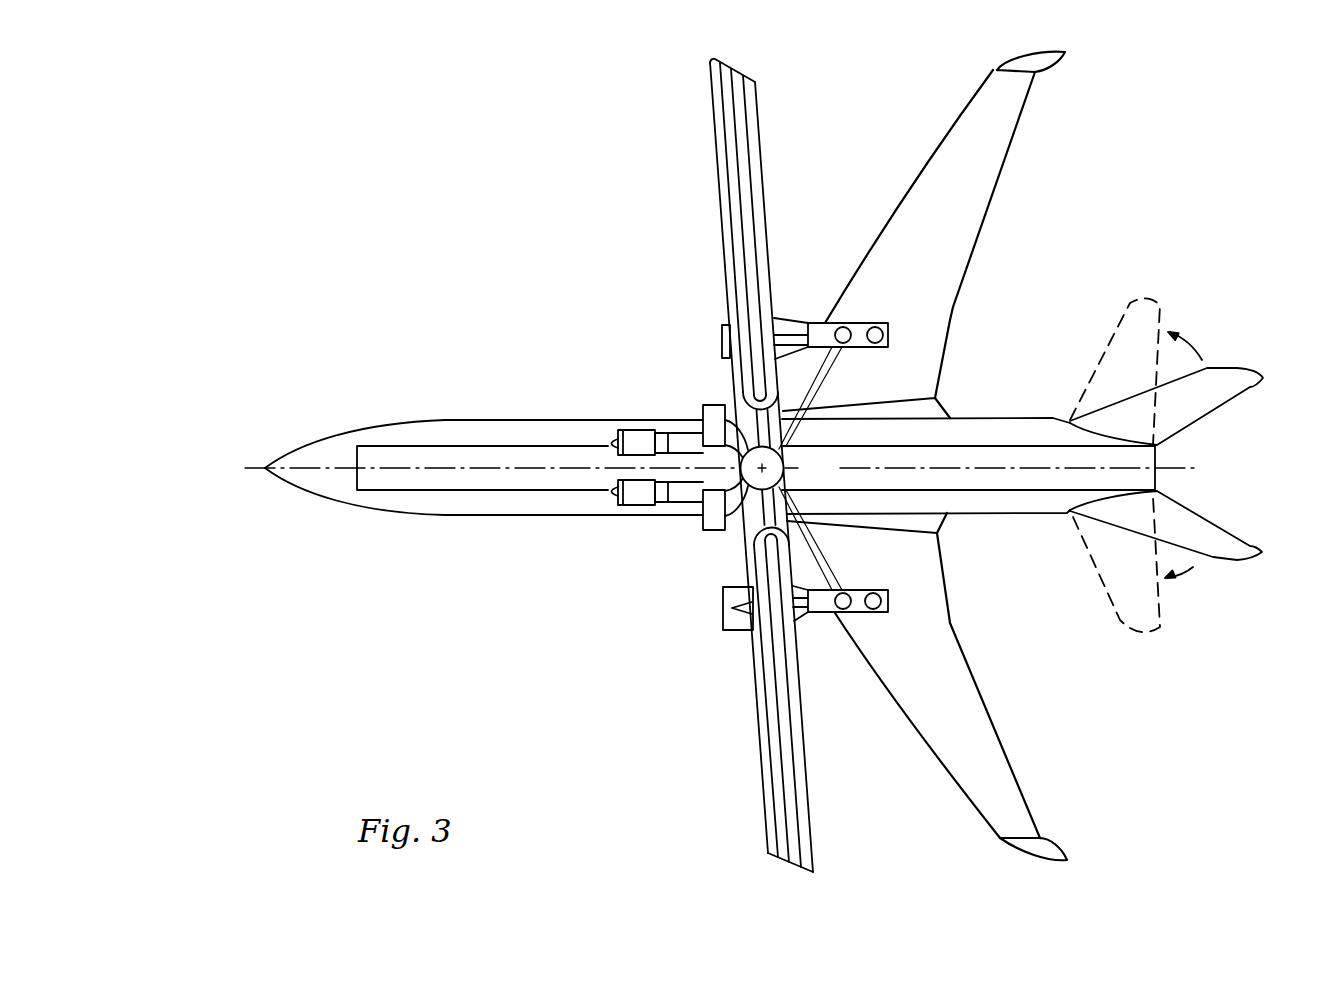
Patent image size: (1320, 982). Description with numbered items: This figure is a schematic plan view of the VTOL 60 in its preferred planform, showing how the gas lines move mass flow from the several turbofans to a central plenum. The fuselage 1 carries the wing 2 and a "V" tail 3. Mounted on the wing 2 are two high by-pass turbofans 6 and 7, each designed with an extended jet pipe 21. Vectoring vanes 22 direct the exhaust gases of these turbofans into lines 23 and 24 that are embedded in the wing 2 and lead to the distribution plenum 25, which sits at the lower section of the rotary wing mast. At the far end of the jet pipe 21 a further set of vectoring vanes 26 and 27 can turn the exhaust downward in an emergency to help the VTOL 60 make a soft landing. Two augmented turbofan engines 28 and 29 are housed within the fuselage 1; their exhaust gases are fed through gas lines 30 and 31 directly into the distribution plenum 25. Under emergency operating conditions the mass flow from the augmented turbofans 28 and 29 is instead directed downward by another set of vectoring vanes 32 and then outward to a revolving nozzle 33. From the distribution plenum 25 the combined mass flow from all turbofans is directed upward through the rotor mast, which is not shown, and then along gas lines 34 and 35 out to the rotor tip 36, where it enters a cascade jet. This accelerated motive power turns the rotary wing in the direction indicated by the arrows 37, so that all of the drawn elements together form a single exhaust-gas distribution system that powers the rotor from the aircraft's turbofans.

The fuselage 1 is at (445, 418).
The wing 2 is at (917, 212).
The "V" tail 3 is at (1210, 535).
The high by-pass turbofan 6 is at (723, 342).
The high by-pass turbofan 7 is at (725, 622).
The extended jet pipe 21 is at (848, 593).
The vectoring vanes 22 is at (850, 323).
The gas line 23 is at (818, 384).
The gas line 24 is at (815, 554).
The distribution plenum 25 is at (783, 470).
The vectoring vanes 26 is at (876, 328).
The vectoring vanes 27 is at (874, 595).
The augmented turbofan engine 28 is at (641, 505).
The augmented turbofan engine 29 is at (641, 430).
The gas line 30 is at (737, 412).
The gas line 31 is at (735, 500).
The vectoring vanes 32 is at (710, 405).
The revolving nozzle 33 is at (700, 512).
The gas line 34 is at (727, 160).
The gas line 35 is at (750, 160).
The rotor tip 36 is at (790, 872).
The arrows 37 is at (847, 80).
The VTOL 60 is at (286, 195).